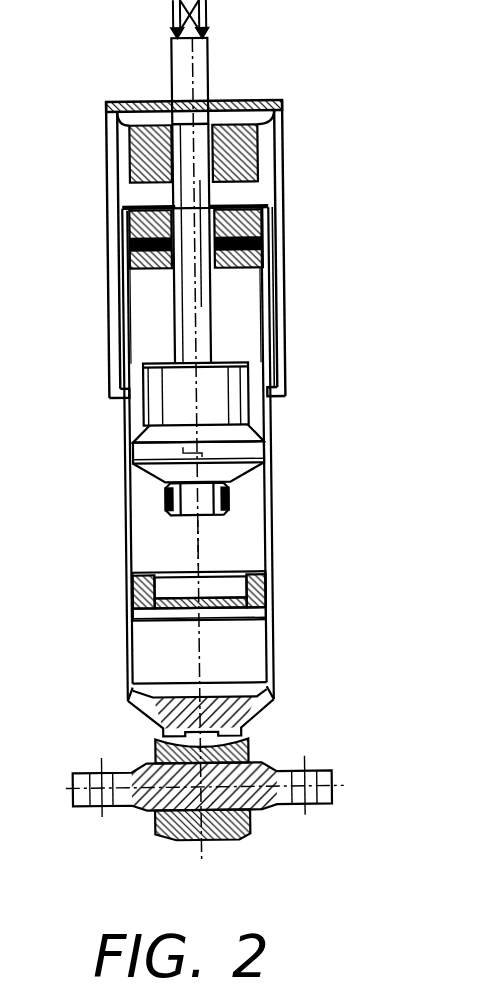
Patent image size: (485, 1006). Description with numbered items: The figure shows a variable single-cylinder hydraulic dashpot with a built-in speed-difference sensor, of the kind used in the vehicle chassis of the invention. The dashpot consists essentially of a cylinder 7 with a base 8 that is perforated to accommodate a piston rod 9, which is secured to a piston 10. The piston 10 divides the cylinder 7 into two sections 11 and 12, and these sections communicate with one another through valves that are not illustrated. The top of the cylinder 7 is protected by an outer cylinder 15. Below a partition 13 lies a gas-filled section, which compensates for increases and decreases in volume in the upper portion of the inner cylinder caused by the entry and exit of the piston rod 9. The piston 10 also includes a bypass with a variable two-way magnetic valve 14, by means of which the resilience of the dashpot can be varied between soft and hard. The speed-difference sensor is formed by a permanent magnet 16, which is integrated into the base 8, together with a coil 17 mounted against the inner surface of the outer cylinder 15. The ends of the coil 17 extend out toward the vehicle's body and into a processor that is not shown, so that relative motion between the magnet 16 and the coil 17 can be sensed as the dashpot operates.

The cylinder 7 is at (270, 483).
The base 8 is at (274, 233).
The piston rod 9 is at (174, 295).
The piston 10 is at (255, 450).
The section 11 is at (236, 533).
The section 12 is at (249, 303).
The partition 13 is at (231, 587).
The variable two-way magnetic valve 14 is at (249, 380).
The outer cylinder 15 is at (287, 118).
The permanent magnet 16 is at (256, 207).
The coil 17 is at (285, 258).